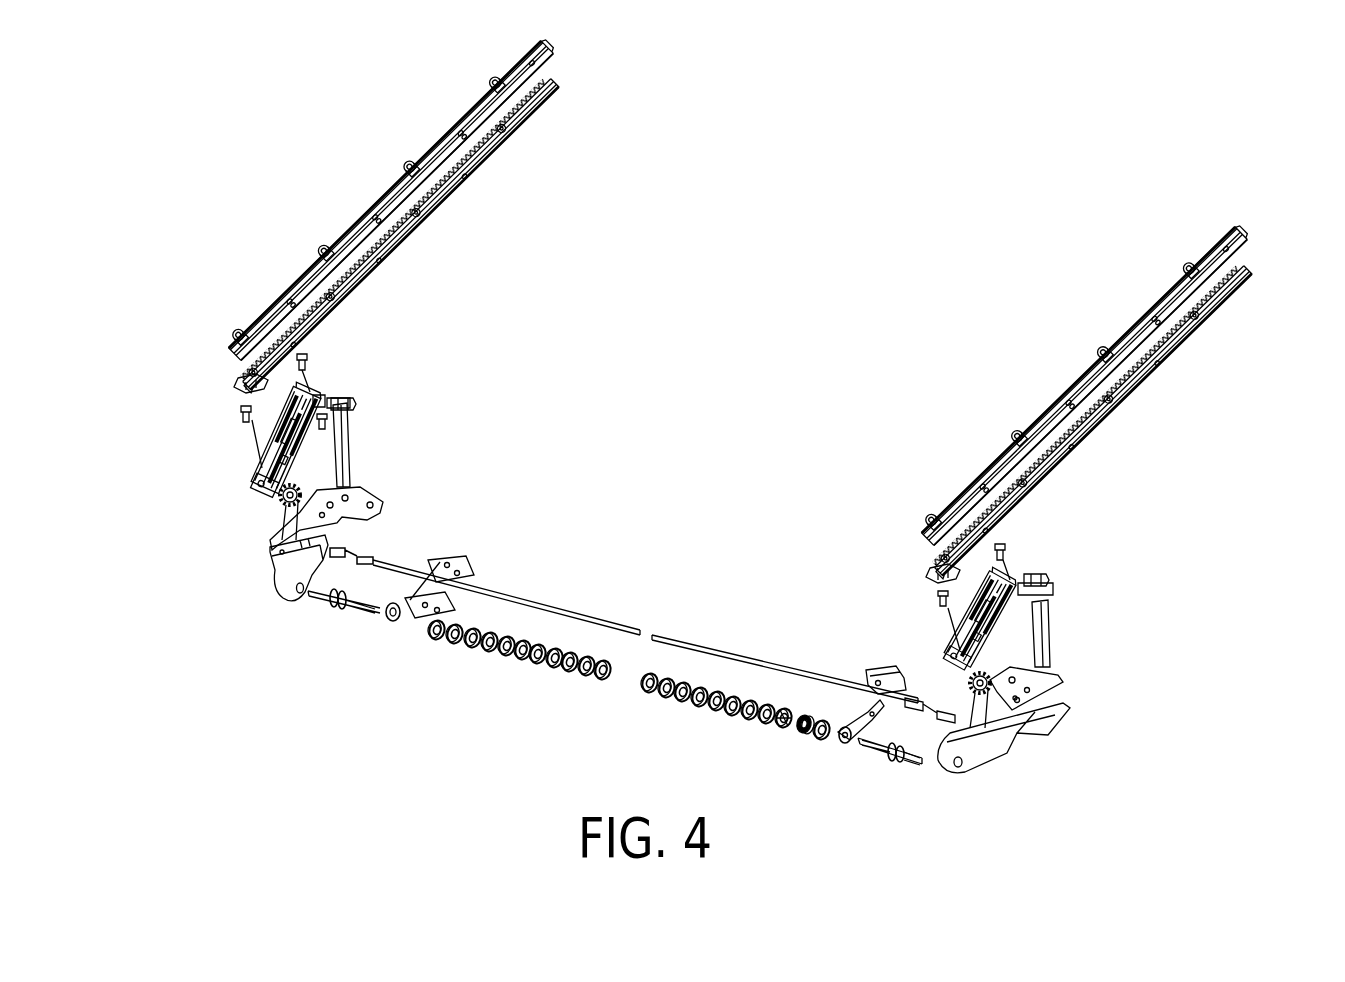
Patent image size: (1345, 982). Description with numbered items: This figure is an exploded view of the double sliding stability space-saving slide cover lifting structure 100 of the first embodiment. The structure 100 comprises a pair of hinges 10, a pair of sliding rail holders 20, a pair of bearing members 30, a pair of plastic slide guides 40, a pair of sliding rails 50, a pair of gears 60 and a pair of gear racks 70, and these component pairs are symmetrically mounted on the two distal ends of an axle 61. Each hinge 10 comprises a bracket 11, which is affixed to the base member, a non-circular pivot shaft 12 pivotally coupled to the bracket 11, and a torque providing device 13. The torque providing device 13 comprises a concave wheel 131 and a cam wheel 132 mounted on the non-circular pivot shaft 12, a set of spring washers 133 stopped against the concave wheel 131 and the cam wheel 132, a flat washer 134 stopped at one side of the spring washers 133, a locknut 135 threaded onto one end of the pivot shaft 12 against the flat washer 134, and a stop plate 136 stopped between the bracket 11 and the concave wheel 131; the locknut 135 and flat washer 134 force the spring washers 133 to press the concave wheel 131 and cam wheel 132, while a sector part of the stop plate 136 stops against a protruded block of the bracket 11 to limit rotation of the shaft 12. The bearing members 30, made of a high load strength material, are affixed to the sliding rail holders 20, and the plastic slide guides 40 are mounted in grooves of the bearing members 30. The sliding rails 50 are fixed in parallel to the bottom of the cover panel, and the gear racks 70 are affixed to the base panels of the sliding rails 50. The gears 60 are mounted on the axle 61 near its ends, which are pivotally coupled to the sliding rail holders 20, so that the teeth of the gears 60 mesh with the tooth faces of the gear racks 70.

The slide cover lifting structure 100 is at (838, 190).
The sliding rail 50 is at (438, 141).
The gear rack 70 is at (470, 162).
The plastic slide guide 40 is at (255, 441).
The bearing member 30 is at (339, 447).
The gear 60 is at (276, 538).
The sliding rail holder 20 is at (288, 600).
The non-circular pivot shaft 12 is at (387, 572).
The bracket 11 is at (465, 557).
The torque providing device 13 is at (525, 624).
The hinge 10 is at (598, 696).
The axle 61 is at (690, 642).
The flat washer 134 is at (645, 688).
The locknut 135 is at (662, 695).
The spring washers 133 is at (697, 700).
The cam wheel 132 is at (786, 717).
The concave wheel 131 is at (820, 727).
The stop plate 136 is at (828, 728).